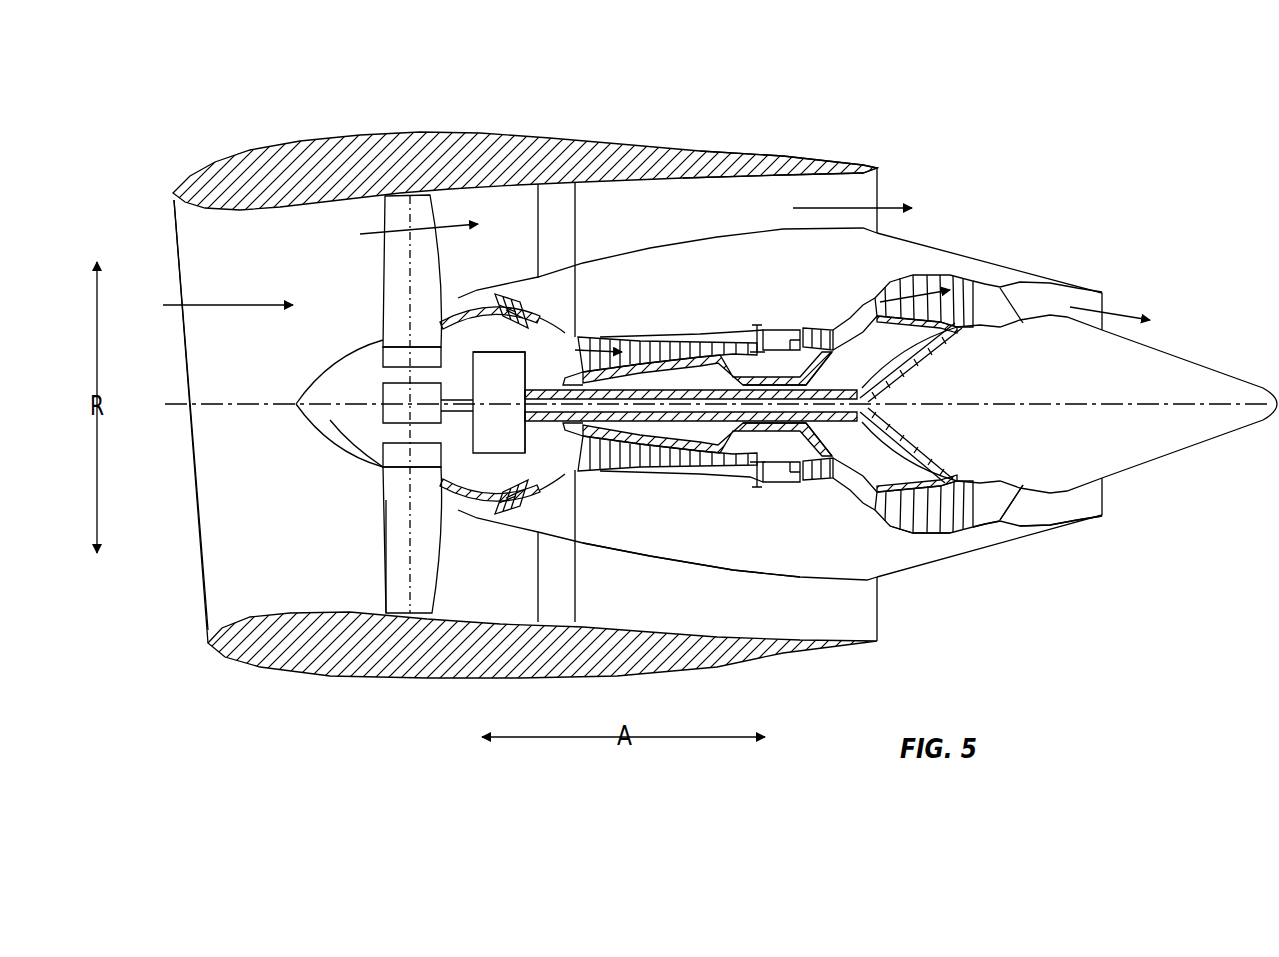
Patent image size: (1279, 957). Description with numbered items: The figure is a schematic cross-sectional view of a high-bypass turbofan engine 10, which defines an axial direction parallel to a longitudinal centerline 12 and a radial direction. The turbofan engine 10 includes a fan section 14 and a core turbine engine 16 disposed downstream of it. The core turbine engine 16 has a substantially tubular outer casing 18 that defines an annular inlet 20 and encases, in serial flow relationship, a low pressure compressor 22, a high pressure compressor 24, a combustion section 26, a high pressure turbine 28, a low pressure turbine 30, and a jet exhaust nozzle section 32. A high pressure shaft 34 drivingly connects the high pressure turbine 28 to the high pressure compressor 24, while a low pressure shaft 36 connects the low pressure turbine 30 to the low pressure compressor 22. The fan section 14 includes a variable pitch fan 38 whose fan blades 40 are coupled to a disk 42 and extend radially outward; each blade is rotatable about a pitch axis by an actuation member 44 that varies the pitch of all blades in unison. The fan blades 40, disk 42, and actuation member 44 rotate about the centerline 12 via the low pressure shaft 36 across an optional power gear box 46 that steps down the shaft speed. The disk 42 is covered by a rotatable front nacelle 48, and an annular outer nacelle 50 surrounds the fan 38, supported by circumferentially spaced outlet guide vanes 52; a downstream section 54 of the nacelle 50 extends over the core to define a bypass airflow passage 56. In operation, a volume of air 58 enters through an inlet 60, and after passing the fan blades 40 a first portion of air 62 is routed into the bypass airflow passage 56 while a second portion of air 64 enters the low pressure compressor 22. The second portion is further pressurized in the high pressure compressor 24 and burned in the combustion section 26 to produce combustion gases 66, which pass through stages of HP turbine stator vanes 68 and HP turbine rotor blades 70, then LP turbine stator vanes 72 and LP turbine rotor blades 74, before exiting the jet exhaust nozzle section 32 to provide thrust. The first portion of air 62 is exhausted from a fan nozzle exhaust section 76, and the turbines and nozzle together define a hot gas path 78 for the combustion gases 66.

The turbofan engine 10 is at (1020, 148).
The longitudinal centerline 12 is at (1045, 400).
The fan section 14 is at (345, 218).
The core turbine engine 16 is at (697, 288).
The outer casing 18 is at (730, 570).
The annular inlet 20 is at (483, 510).
The low pressure compressor 22 is at (545, 465).
The high pressure compressor 24 is at (606, 458).
The combustion section 26 is at (777, 468).
The high pressure turbine 28 is at (913, 468).
The low pressure turbine 30 is at (958, 533).
The jet exhaust nozzle section 32 is at (1018, 512).
The high pressure shaft 34 is at (813, 378).
The low pressure shaft 36 is at (893, 367).
The variable pitch fan 38 is at (350, 455).
The fan blades 40 is at (385, 522).
The disk 42 is at (393, 358).
The actuation member 44 is at (382, 385).
The power gear box 46 is at (520, 365).
The front nacelle 48 is at (300, 420).
The outer nacelle 50 is at (425, 677).
The outlet guide vanes 52 is at (577, 215).
The downstream section 54 is at (820, 157).
The bypass airflow passage 56 is at (751, 223).
The volume of air 58 is at (228, 300).
The inlet 60 is at (200, 625).
The first portion of air 62 is at (403, 233).
The second portion of air 64 is at (457, 300).
The combustion gases 66 is at (835, 330).
The HP turbine stator vanes 68 is at (810, 484).
The HP turbine rotor blades 70 is at (877, 441).
The LP turbine stator vanes 72 is at (880, 517).
The LP turbine rotor blades 74 is at (897, 520).
The fan nozzle exhaust section 76 is at (867, 192).
The hot gas path 78 is at (865, 305).